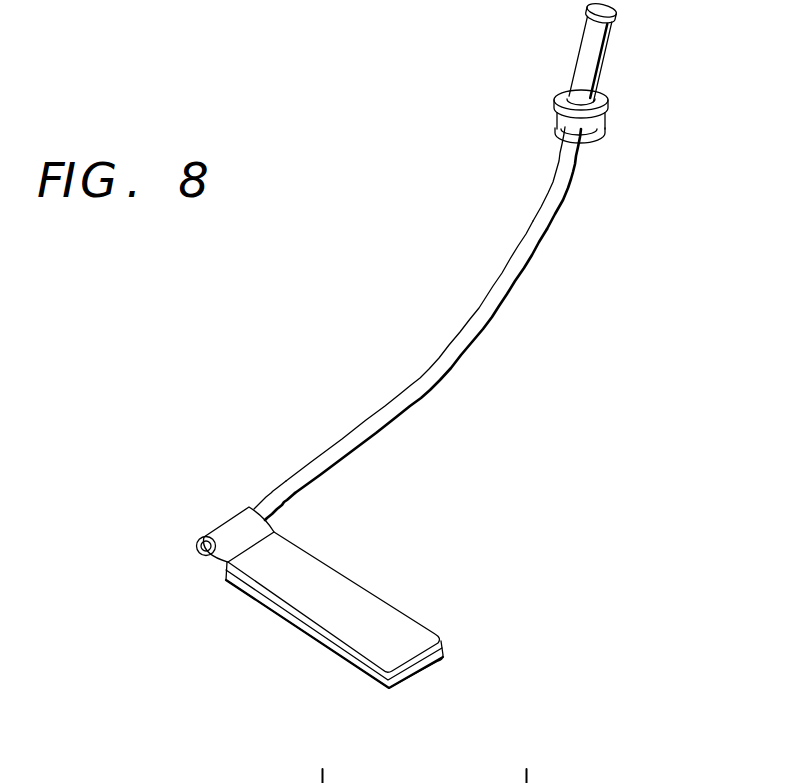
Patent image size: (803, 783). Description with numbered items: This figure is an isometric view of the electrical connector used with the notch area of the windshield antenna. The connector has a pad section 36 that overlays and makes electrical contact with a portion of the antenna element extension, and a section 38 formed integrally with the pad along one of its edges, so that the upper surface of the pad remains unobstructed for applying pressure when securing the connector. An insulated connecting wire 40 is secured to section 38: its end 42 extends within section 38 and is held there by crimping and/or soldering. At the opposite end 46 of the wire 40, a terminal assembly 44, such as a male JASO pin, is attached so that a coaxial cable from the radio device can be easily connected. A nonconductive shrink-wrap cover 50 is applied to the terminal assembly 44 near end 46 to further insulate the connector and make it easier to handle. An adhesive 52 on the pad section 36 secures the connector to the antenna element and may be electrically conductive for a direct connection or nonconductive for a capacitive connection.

The pad section 36 is at (341, 573).
The section 38 is at (230, 519).
The insulated connecting wire 40 is at (476, 343).
The end of wire 42 is at (278, 487).
The terminal assembly 44 is at (608, 46).
The end of wire 46 is at (572, 190).
The nonconductive shrink-wrap cover 50 is at (600, 124).
The adhesive 52 is at (261, 603).